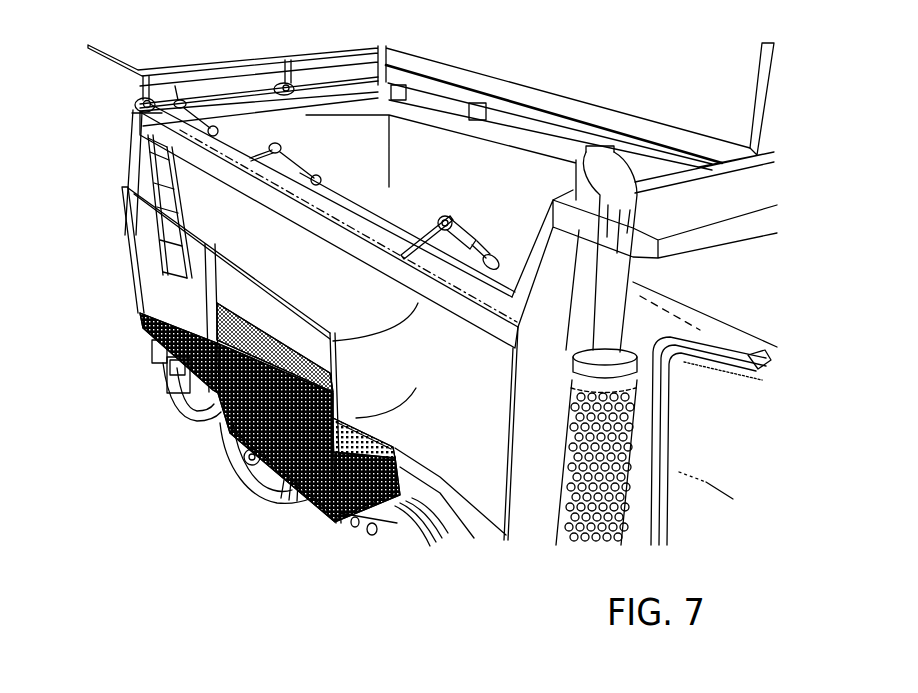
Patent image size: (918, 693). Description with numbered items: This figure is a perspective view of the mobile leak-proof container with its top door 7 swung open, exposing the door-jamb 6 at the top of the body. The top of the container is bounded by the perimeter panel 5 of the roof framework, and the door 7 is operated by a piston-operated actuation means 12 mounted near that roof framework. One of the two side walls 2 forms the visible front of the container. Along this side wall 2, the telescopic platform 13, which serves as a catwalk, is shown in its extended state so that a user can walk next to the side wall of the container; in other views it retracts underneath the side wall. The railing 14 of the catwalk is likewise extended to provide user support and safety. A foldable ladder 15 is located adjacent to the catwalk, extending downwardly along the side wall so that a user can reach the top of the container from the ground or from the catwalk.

The side wall 2 is at (484, 173).
The perimeter panel 5 is at (377, 210).
The door-jamb 6 is at (474, 128).
The top door 7 is at (742, 100).
The piston-operated actuation means 12 is at (178, 115).
The telescopic platform 13 is at (140, 324).
The railing 14 is at (120, 207).
The ladder 15 is at (158, 183).